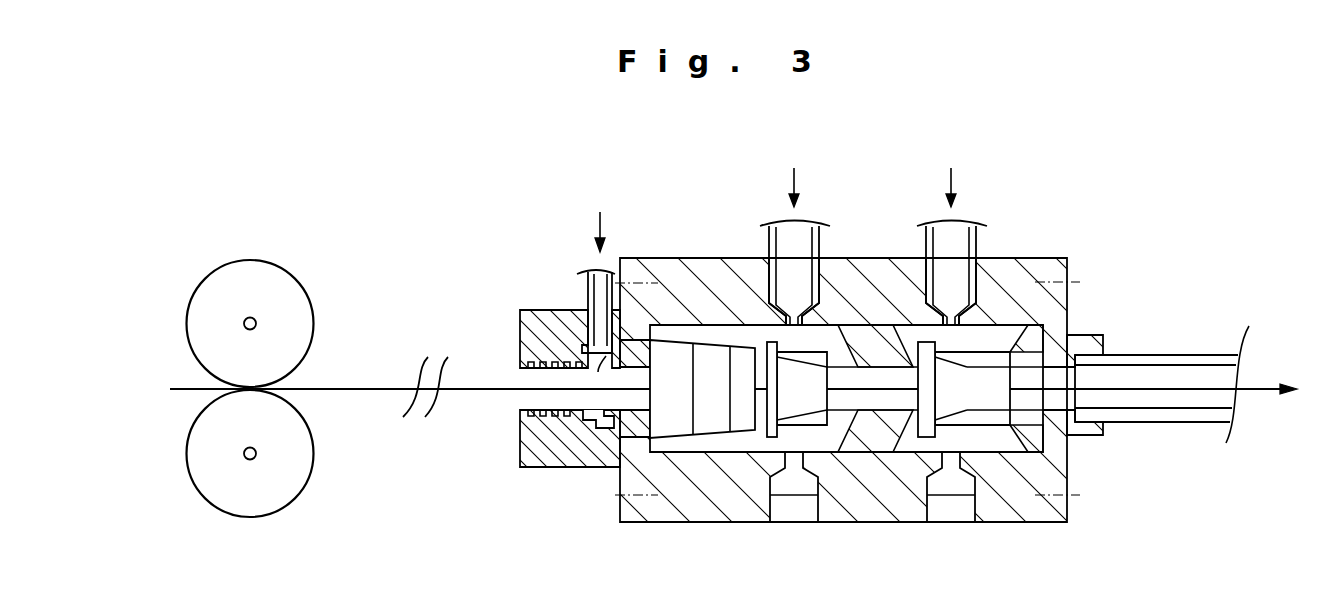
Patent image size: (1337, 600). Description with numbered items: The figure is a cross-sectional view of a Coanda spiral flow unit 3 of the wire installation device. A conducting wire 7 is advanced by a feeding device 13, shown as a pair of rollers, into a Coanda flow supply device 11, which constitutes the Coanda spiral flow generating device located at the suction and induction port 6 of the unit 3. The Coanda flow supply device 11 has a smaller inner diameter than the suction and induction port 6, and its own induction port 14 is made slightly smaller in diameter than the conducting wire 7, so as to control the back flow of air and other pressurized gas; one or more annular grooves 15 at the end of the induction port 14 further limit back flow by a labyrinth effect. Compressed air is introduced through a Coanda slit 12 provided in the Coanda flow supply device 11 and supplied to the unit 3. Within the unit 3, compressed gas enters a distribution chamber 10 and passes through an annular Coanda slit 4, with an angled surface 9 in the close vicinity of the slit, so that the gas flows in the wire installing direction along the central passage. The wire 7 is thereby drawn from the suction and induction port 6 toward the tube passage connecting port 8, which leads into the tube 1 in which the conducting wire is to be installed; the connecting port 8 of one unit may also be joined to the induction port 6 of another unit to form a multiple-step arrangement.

The tube 1 is at (1199, 424).
The Coanda spiral flow unit 3 is at (1026, 535).
The Coanda slit 4 is at (790, 406).
The suction and induction port 6 is at (666, 362).
The conducting wire 7 is at (480, 388).
The tube passage connecting port 8 is at (1082, 396).
The angled surface 9 is at (800, 370).
The distribution chamber 10 is at (812, 331).
The Coanda flow supply device 11 is at (556, 484).
The Coanda slit 12 is at (592, 422).
The feeding device 13 is at (299, 298).
The induction port 14 is at (518, 388).
The annular groove 15 is at (598, 370).